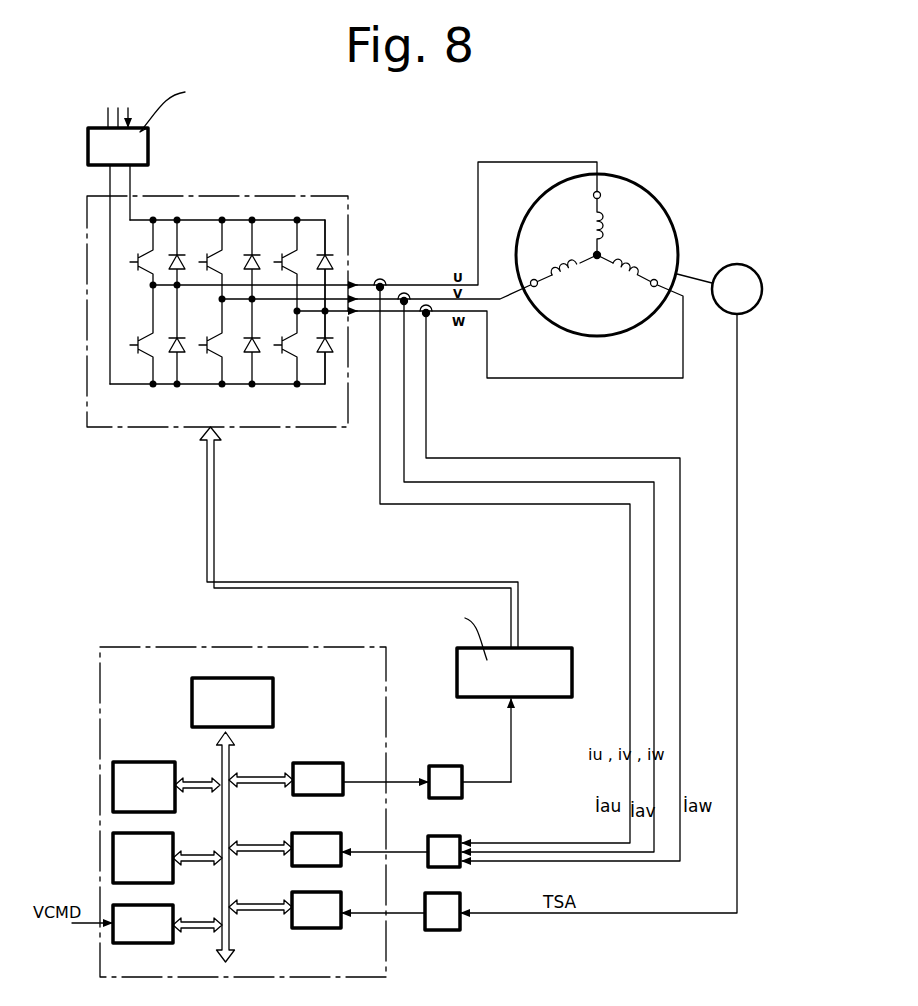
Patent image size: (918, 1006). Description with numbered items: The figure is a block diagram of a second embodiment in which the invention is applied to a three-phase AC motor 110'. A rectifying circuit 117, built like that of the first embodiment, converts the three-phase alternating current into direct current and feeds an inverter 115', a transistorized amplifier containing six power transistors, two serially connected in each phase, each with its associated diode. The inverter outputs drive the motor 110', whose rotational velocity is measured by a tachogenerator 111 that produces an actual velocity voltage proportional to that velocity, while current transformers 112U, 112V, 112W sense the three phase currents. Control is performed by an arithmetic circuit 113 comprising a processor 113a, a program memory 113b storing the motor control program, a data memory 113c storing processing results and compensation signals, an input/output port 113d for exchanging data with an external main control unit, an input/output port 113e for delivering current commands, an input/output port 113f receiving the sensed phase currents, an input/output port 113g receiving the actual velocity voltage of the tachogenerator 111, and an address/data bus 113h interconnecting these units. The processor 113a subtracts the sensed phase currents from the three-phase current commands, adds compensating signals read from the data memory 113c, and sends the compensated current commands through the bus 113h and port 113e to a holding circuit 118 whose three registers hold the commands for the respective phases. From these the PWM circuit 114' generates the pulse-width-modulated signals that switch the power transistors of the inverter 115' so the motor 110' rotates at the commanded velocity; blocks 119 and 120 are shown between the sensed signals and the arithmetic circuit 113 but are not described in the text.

The rectifying circuit 117 is at (148, 147).
The inverter 115' is at (222, 280).
The three-phase AC motor 110' is at (604, 240).
The tachogenerator 111 is at (745, 266).
The current transformer 112U is at (386, 280).
The current transformer 112V is at (410, 293).
The current transformer 112W is at (430, 317).
The arithmetic circuit 113 is at (143, 646).
The processor 113a is at (273, 704).
The program memory 113b is at (155, 762).
The data memory 113c is at (177, 836).
The input/output port 113d is at (165, 934).
The input/output port 113e is at (336, 763).
The input/output port 113f is at (341, 836).
The input/output port 113g is at (330, 930).
The address/data bus 113h is at (229, 936).
The PWM circuit 114' is at (456, 664).
The holding circuit 118 is at (465, 793).
The analog-to-digital converter 119 is at (462, 868).
The analog-to-digital converter 120 is at (458, 932).